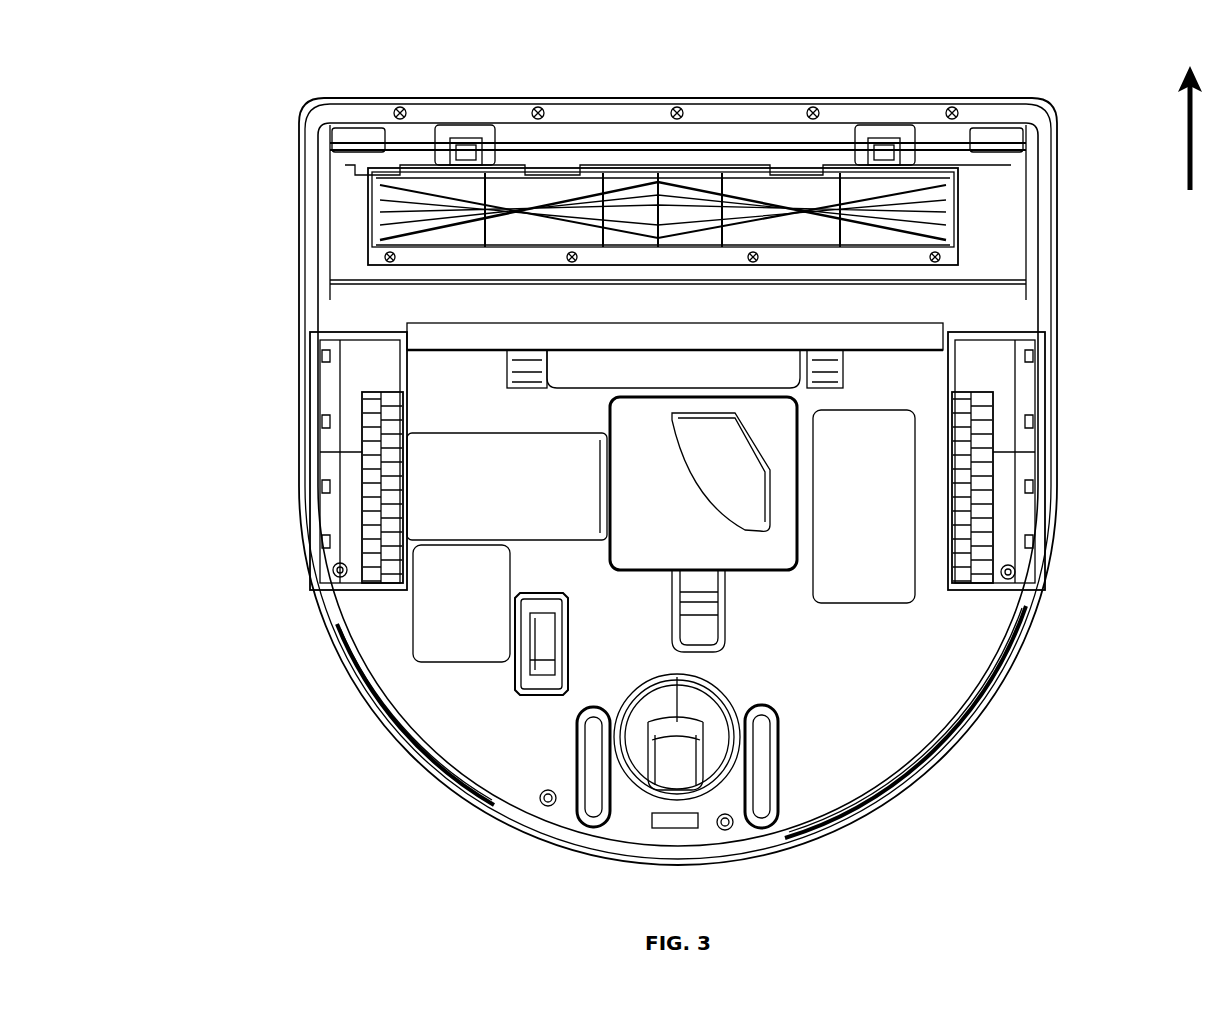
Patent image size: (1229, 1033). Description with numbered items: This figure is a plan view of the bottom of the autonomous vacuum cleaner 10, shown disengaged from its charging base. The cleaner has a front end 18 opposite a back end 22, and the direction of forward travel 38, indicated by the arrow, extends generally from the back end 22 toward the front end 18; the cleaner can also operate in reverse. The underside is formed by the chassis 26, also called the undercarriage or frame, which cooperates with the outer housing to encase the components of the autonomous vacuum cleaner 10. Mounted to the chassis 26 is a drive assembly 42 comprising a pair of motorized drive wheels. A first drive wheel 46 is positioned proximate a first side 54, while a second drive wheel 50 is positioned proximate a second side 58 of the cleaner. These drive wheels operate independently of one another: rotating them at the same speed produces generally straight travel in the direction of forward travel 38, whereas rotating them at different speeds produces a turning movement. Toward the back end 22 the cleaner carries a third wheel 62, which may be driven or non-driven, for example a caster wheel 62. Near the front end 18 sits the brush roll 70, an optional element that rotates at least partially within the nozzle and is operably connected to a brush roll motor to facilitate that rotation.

The autonomous vacuum cleaner 10 is at (232, 178).
The front end 18 is at (470, 80).
The brush roll 70 is at (762, 195).
The direction of forward travel 38 is at (1187, 130).
The second side 58 is at (292, 365).
The first side 54 is at (1050, 355).
The drive assembly 42 is at (343, 465).
The second drive wheel 50 is at (368, 483).
The first drive wheel 46 is at (990, 508).
The chassis 26 is at (880, 615).
The back end 22 is at (631, 868).
The third wheel 62 is at (680, 765).